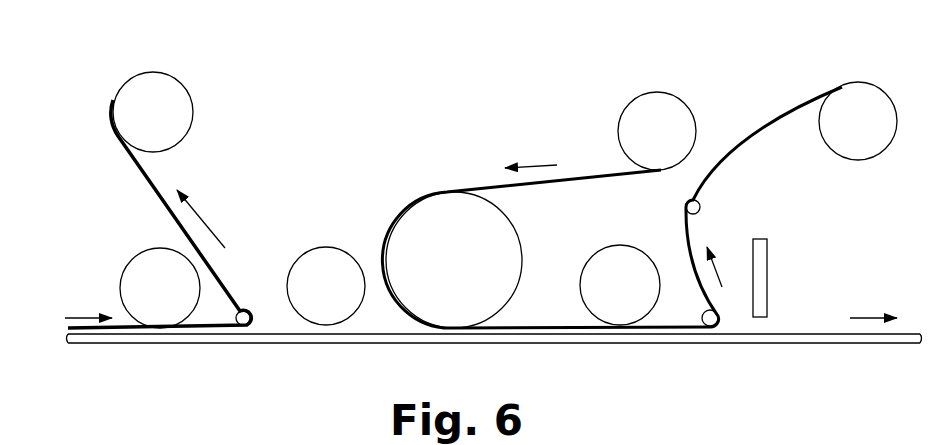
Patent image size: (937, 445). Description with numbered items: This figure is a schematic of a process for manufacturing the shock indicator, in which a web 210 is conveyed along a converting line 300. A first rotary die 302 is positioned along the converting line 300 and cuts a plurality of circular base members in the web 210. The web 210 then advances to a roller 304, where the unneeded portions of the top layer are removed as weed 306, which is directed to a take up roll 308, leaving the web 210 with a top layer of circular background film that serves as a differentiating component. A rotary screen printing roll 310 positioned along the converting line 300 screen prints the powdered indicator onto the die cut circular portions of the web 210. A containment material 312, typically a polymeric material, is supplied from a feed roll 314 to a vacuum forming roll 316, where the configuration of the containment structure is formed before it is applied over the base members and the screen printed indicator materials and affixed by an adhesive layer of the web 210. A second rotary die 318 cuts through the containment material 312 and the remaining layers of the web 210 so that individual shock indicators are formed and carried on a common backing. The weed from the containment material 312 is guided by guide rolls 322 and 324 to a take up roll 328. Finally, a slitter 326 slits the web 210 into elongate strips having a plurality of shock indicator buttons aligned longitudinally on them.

The converting line 300 is at (380, 57).
The web 210 is at (62, 335).
The first rotary die 302 is at (135, 272).
The roller 304 is at (236, 340).
The weed 306 is at (148, 187).
The take up roll 308 is at (185, 107).
The rotary screen printing roll 310 is at (320, 255).
The containment material 312 is at (580, 173).
The feed roll 314 is at (650, 103).
The vacuum forming roll 316 is at (430, 218).
The second rotary die 318 is at (617, 255).
The guide roll 322 is at (700, 204).
The guide roll 324 is at (710, 328).
The slitter 326 is at (763, 253).
The take up roll 328 is at (860, 88).